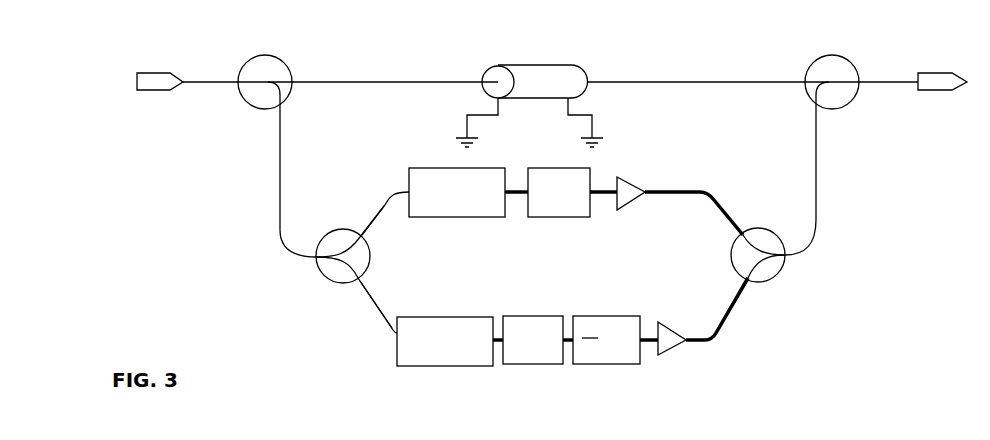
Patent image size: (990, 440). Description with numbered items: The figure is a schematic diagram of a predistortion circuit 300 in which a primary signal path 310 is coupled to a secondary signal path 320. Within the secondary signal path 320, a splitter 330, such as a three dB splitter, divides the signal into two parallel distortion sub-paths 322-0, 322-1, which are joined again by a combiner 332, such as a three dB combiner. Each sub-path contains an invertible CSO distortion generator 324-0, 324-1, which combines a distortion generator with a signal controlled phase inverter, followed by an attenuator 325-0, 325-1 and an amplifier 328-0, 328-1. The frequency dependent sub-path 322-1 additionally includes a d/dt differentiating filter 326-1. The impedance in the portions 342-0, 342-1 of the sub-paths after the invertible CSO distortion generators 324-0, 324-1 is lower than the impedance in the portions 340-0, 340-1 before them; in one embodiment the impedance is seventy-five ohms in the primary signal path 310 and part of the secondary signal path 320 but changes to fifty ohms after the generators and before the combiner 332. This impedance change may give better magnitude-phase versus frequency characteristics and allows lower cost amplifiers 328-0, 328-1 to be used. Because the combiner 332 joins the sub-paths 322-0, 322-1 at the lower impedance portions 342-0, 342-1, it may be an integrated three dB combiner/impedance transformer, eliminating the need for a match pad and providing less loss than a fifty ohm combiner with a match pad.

The predistortion circuit 300 is at (372, 61).
The primary signal path 310 is at (634, 68).
The secondary signal path 320 is at (236, 201).
The distortion sub-path 322-0 is at (352, 214).
The frequency dependent sub-path 322-1 is at (351, 314).
The invertible CSO distortion generator 324-0 is at (467, 218).
The invertible CSO distortion generator 324-1 is at (433, 367).
The attenuator 325-0 is at (557, 218).
The attenuator 325-1 is at (525, 365).
The d/dt differentiating filter 326-1 is at (603, 365).
The amplifier 328-0 is at (635, 199).
The amplifier 328-1 is at (670, 349).
The splitter 330 is at (327, 283).
The combiner 332 is at (770, 280).
The portion of sub-path before invertible CSO generator 340-0 is at (378, 215).
The portion of sub-path before invertible CSO generator 340-1 is at (380, 313).
The portion of sub-path after invertible CSO generator 342-0 is at (722, 211).
The portion of sub-path after invertible CSO generator 342-1 is at (730, 306).